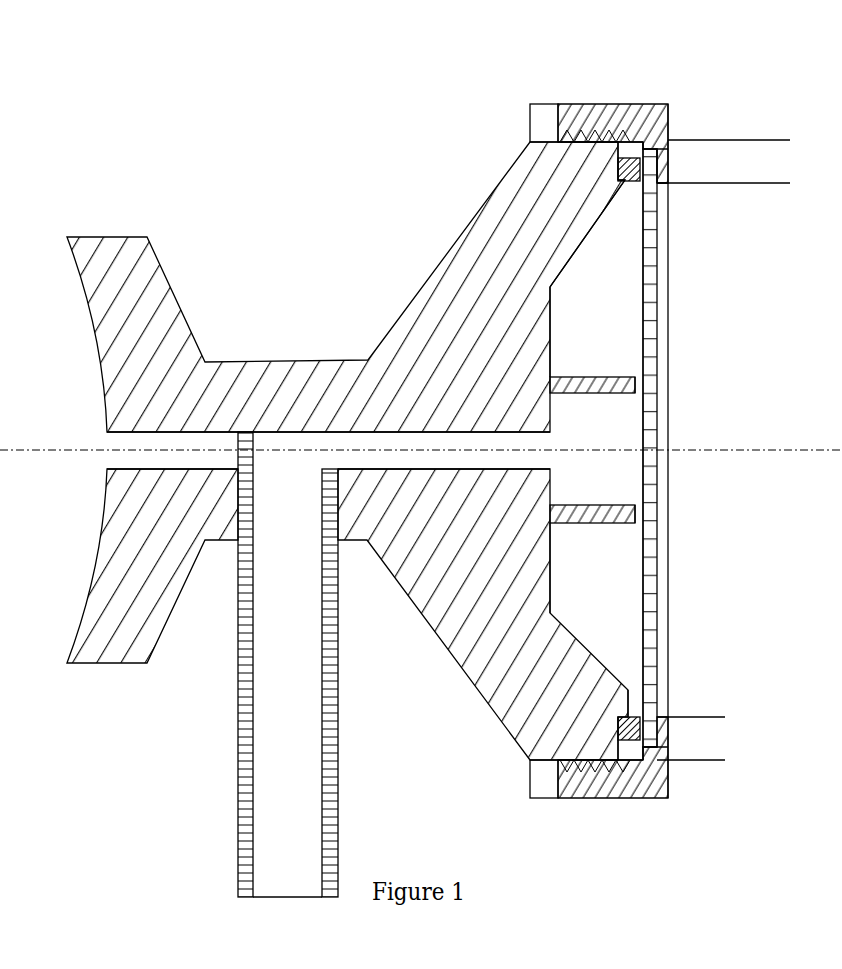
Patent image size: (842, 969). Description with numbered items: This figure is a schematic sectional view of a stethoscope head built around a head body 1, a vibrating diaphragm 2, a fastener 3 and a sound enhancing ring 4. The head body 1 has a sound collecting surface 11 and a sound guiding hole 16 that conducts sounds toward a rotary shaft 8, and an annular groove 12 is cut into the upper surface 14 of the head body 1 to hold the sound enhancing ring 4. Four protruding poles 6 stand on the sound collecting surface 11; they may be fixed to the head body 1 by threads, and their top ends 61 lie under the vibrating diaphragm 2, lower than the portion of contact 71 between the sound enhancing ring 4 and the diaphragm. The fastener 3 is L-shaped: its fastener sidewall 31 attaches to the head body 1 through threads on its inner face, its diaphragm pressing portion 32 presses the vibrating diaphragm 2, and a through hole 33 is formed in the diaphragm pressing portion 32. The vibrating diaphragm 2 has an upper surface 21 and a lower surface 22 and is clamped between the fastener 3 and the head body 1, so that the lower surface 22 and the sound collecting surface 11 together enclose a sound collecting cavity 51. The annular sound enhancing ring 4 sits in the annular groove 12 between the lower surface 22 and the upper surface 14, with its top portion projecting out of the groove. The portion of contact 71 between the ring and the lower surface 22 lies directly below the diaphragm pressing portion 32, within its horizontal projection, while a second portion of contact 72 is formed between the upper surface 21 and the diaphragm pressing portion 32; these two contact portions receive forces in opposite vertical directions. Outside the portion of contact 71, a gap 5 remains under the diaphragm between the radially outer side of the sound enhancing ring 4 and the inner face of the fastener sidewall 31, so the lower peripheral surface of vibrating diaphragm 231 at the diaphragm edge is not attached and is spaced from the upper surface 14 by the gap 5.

The head body 1 is at (410, 363).
The vibrating diaphragm 2 is at (652, 580).
The fastener 3 is at (668, 106).
The sound enhancing ring 4 is at (612, 172).
The gap 5 is at (633, 150).
The protruding pole 6 is at (605, 382).
The rotary shaft 8 is at (243, 735).
The sound collecting surface 11 is at (558, 353).
The annular groove 12 is at (608, 183).
The upper surface 14 is at (625, 147).
The sound guiding hole 16 is at (395, 440).
The upper surface 21 is at (658, 268).
The lower surface 22 is at (645, 607).
The fastener sidewall 31 is at (638, 135).
The diaphragm pressing portion 32 is at (780, 140).
The through hole 33 is at (665, 243).
The sound collecting cavity 51 is at (622, 638).
The top end 61 is at (647, 390).
The portion of contact 71 is at (625, 170).
The portion of contact 72 is at (663, 163).
The lower peripheral surface of vibrating diaphragm 231 is at (612, 160).